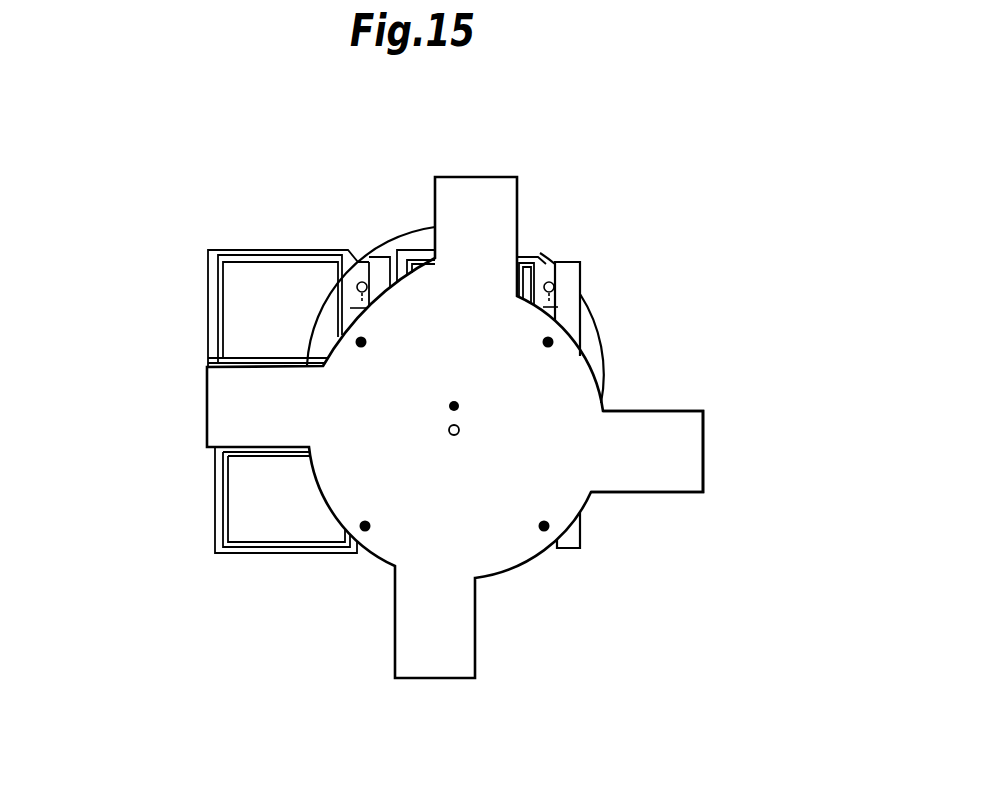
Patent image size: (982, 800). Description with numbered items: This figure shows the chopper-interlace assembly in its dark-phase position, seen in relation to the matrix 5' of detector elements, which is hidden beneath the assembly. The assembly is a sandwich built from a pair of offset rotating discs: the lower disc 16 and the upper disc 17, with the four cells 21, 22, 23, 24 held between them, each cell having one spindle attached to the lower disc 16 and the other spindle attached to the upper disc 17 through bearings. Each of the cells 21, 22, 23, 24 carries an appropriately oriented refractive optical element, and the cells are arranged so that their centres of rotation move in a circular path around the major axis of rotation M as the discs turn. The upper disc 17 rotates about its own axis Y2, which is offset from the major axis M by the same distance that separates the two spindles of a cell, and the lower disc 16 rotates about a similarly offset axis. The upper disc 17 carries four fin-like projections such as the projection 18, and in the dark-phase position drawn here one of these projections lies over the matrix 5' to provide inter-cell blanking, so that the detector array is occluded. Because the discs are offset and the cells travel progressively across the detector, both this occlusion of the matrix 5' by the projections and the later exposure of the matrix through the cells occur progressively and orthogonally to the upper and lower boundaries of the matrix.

The matrix of detector elements 5' is at (364, 427).
The lower disc 16 is at (390, 242).
The upper disc 17 is at (562, 308).
The fin-like projection 18 is at (683, 469).
The cell 21 is at (215, 292).
The cell 22 is at (540, 260).
The cell 23 is at (577, 537).
The cell 24 is at (244, 549).
The major axis of rotation M is at (471, 410).
The axis of rotation of the upper disc Y2 is at (477, 443).